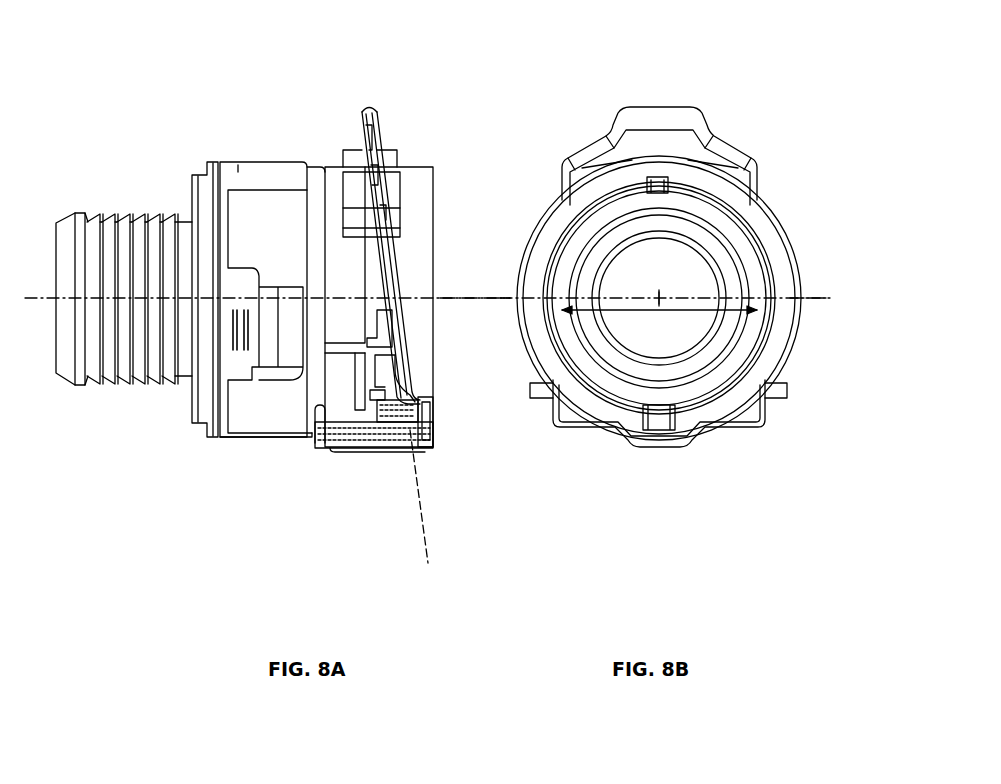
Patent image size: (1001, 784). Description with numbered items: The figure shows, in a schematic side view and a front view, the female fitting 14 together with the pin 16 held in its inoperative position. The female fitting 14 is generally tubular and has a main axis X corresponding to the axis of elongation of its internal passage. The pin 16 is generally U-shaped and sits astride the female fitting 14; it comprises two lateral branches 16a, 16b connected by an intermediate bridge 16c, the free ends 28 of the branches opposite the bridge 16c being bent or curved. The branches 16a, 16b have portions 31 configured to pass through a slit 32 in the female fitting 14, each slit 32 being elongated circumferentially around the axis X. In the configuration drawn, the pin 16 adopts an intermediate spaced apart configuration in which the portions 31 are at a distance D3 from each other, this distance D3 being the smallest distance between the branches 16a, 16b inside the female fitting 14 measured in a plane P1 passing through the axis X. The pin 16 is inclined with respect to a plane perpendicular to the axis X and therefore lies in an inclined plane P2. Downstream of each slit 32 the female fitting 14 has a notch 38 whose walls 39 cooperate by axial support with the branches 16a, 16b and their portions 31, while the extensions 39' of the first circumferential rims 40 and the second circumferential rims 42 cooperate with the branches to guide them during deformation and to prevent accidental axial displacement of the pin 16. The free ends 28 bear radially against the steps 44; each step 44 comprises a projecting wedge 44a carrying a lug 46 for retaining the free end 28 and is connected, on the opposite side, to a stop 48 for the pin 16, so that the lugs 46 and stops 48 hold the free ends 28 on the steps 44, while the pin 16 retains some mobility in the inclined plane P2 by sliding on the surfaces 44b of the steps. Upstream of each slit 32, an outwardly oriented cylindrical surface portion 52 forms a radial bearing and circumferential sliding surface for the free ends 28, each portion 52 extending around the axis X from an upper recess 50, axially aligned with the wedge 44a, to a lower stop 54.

In FIG. 8A, the female fitting 14 is at (242, 162).
In FIG. 8A, the pin 16 is at (377, 118).
In FIG. 8B, the pin 16 is at (735, 133).
In FIG. 8A, the lateral branch 16a is at (405, 235).
In FIG. 8B, the lateral branch 16a is at (553, 273).
In FIG. 8B, the lateral branch 16b is at (760, 272).
In FIG. 8A, the intermediate bridge 16c is at (363, 110).
In FIG. 8A, the free end 28 is at (407, 430).
In FIG. 8A, the portion 31 is at (386, 255).
In FIG. 8B, the portion 31 is at (659, 298).
In FIG. 8A, the slit 32 is at (340, 378).
In FIG. 8A, the notch 38 is at (382, 338).
In FIG. 8A, the wall 39 is at (399, 233).
In FIG. 8A, the extension 39' is at (412, 162).
In FIG. 8A, the first circumferential rim 40 is at (363, 297).
In FIG. 8A, the second circumferential rim 42 is at (385, 200).
In FIG. 8A, the step 44 is at (437, 415).
In FIG. 8A, the projecting wedge 44a is at (315, 442).
In FIG. 8A, the surface 44b is at (374, 435).
In FIG. 8A, the lug 46 is at (320, 424).
In FIG. 8A, the stop 48 is at (420, 447).
In FIG. 8A, the upper recess 50 is at (193, 392).
In FIG. 8A, the cylindrical surface portion 52 is at (365, 395).
In FIG. 8A, the lower stop 54 is at (348, 448).
In FIG. 8A, the main axis X is at (455, 300).
In FIG. 8B, the main axis X is at (669, 288).
In FIG. 8B, the plane P1 is at (820, 300).
In FIG. 8A, the inclined plane P2 is at (428, 545).
In FIG. 8B, the distance D3 is at (688, 310).